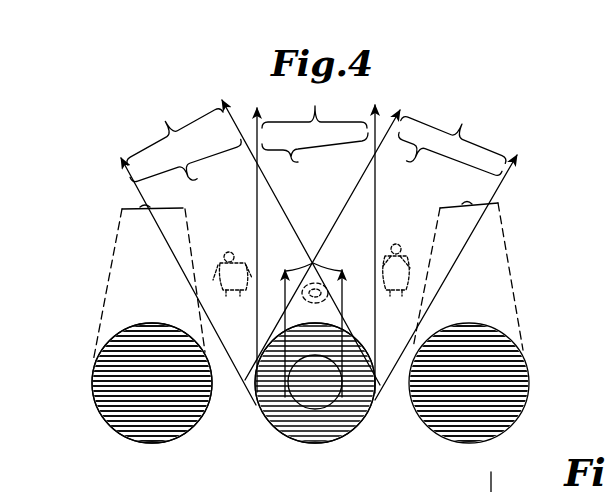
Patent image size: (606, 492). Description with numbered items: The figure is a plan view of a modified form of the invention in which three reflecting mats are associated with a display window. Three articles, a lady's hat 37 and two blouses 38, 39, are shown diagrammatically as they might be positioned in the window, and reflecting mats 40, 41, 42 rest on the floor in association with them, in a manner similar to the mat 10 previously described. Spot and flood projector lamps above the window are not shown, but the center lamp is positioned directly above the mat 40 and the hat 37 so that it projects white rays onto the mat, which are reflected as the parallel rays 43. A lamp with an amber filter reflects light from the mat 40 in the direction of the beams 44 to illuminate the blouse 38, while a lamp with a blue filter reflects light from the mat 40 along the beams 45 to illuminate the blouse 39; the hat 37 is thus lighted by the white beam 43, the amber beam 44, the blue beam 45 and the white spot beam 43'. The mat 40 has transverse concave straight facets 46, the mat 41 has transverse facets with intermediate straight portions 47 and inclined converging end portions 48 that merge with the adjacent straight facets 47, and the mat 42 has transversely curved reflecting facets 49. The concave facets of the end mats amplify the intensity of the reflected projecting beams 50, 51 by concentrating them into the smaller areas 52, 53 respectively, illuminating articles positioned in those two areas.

The mat 10 is at (488, 483).
The lady's hat 37 is at (302, 302).
The blouse 38 is at (234, 252).
The blouse 39 is at (405, 240).
The reflecting mat 40 is at (307, 444).
The reflecting mat 41 is at (145, 447).
The reflecting mat 42 is at (455, 444).
The parallel rays 43 is at (315, 141).
The white spot beam 43' is at (327, 321).
The amber beams 44 is at (183, 147).
The blue beams 45 is at (452, 148).
The transverse concave straight facets 46 is at (273, 425).
The intermediate straight portions 47 is at (128, 410).
The inclined converging end portions 48 is at (92, 372).
The transversely curved reflecting facets 49 is at (427, 410).
The reflected projecting beams 50 is at (122, 209).
The reflected projecting beams 51 is at (499, 266).
The smaller area 52 is at (143, 206).
The smaller area 53 is at (490, 203).